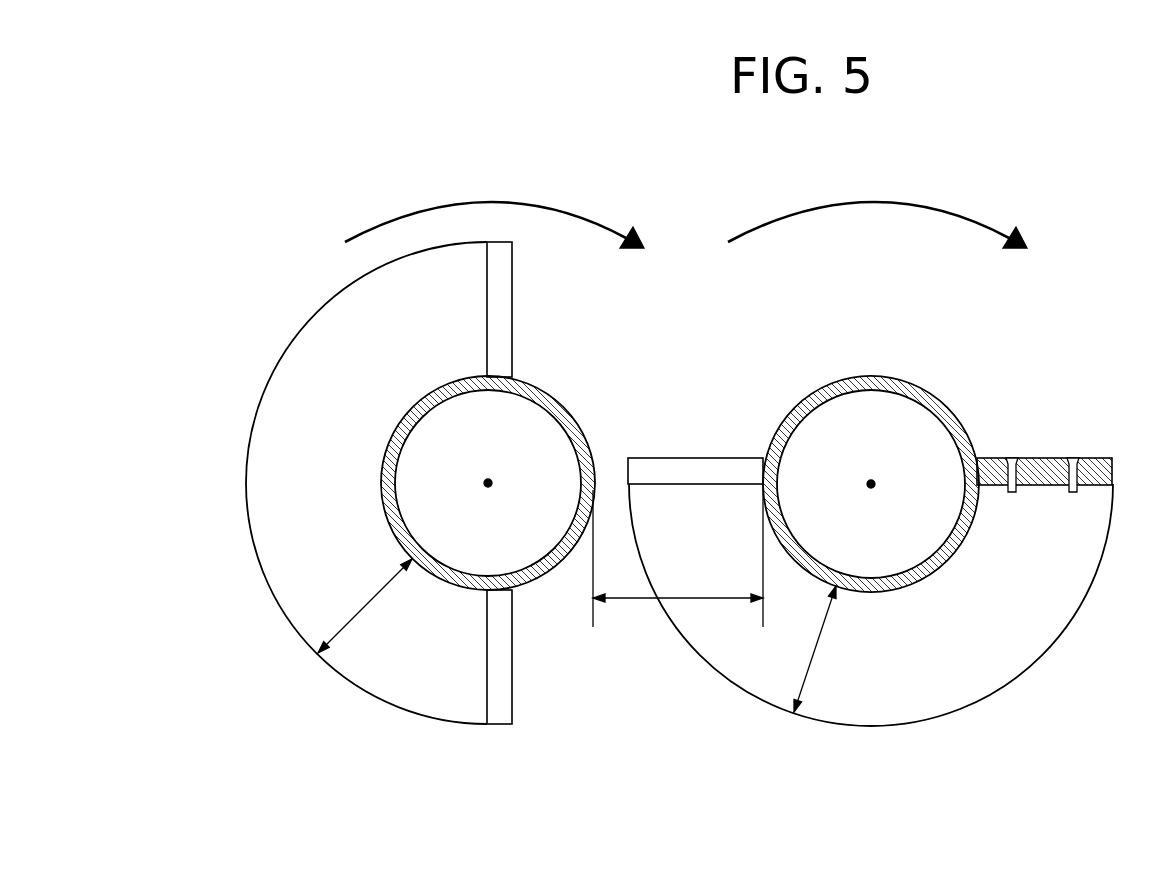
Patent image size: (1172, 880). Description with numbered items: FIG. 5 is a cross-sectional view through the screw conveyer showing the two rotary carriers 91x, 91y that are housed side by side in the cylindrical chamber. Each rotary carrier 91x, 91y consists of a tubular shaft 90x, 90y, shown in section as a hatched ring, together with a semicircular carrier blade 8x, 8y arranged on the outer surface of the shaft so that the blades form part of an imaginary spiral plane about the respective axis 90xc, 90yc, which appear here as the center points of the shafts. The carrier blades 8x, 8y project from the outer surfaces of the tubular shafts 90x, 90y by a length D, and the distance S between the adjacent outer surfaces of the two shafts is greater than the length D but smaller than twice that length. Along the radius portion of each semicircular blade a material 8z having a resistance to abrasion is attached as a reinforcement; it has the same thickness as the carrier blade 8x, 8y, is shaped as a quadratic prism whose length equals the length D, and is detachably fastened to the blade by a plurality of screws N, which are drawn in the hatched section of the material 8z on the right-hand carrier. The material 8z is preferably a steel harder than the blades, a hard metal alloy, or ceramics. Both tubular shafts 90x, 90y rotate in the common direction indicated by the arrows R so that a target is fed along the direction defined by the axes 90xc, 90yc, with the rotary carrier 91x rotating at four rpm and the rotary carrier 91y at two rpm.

The carrier blade 8x is at (274, 430).
The carrier blade 8y is at (1030, 642).
The material having a resistance to abrasion 8z is at (500, 286).
The rotary carrier 91x is at (289, 292).
The rotary carrier 91y is at (1053, 337).
The tubular shaft 90x is at (557, 402).
The tubular shaft 90y is at (803, 398).
The axis 90xc is at (488, 483).
The axis 90yc is at (871, 484).
The screw N is at (1012, 458).
The arrow indicating rotation direction R is at (487, 200).
The length of projection of carrier blades D is at (366, 606).
The distance between outer surfaces of tubular shafts S is at (677, 599).